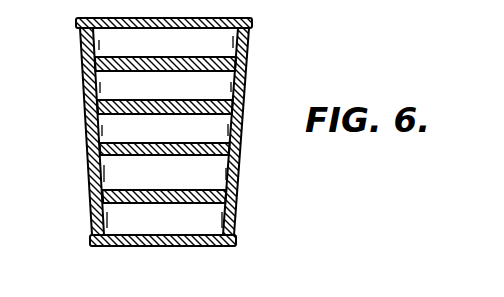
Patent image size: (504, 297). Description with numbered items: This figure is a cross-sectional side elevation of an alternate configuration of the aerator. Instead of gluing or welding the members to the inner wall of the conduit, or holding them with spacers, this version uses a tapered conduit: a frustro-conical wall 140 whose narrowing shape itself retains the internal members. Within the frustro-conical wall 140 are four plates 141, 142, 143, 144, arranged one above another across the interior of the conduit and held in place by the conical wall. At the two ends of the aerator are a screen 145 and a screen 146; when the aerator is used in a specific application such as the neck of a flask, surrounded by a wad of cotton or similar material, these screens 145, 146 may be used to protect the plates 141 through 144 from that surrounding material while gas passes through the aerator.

The frustro-conical wall 140 is at (242, 104).
The plate 141 is at (244, 58).
The plate 142 is at (240, 84).
The plate 143 is at (243, 148).
The plate 144 is at (239, 186).
The screen 145 is at (208, 243).
The screen 146 is at (113, 19).